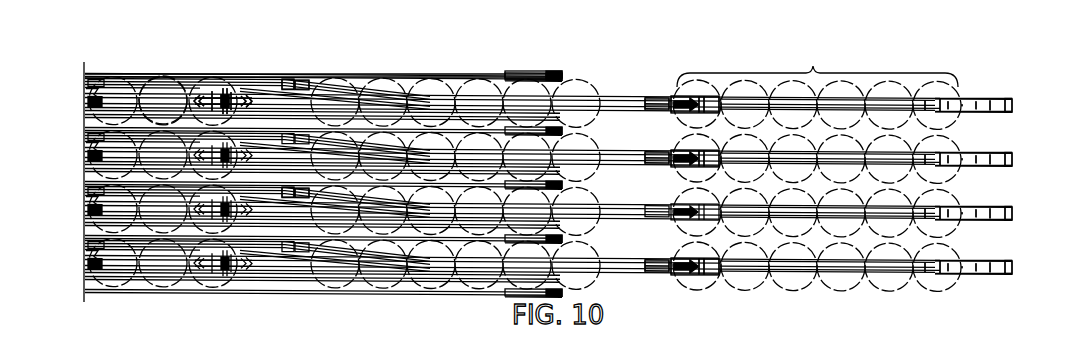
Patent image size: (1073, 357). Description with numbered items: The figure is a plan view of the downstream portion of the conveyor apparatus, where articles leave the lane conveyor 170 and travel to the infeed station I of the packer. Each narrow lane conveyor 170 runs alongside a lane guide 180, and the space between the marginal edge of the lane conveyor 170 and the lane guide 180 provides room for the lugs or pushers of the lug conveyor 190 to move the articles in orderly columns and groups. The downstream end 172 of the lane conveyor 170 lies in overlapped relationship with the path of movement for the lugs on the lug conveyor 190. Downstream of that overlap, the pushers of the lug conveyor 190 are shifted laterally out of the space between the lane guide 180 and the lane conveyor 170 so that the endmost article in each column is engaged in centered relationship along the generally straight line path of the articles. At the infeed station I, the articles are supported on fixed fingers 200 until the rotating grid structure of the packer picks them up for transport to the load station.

The lane conveyor 170 is at (154, 92).
The downstream end 172 is at (238, 90).
The lane guide 180 is at (386, 74).
The lug conveyor 190 is at (274, 130).
The fixed finger 200 is at (1001, 111).
The infeed station I is at (817, 67).